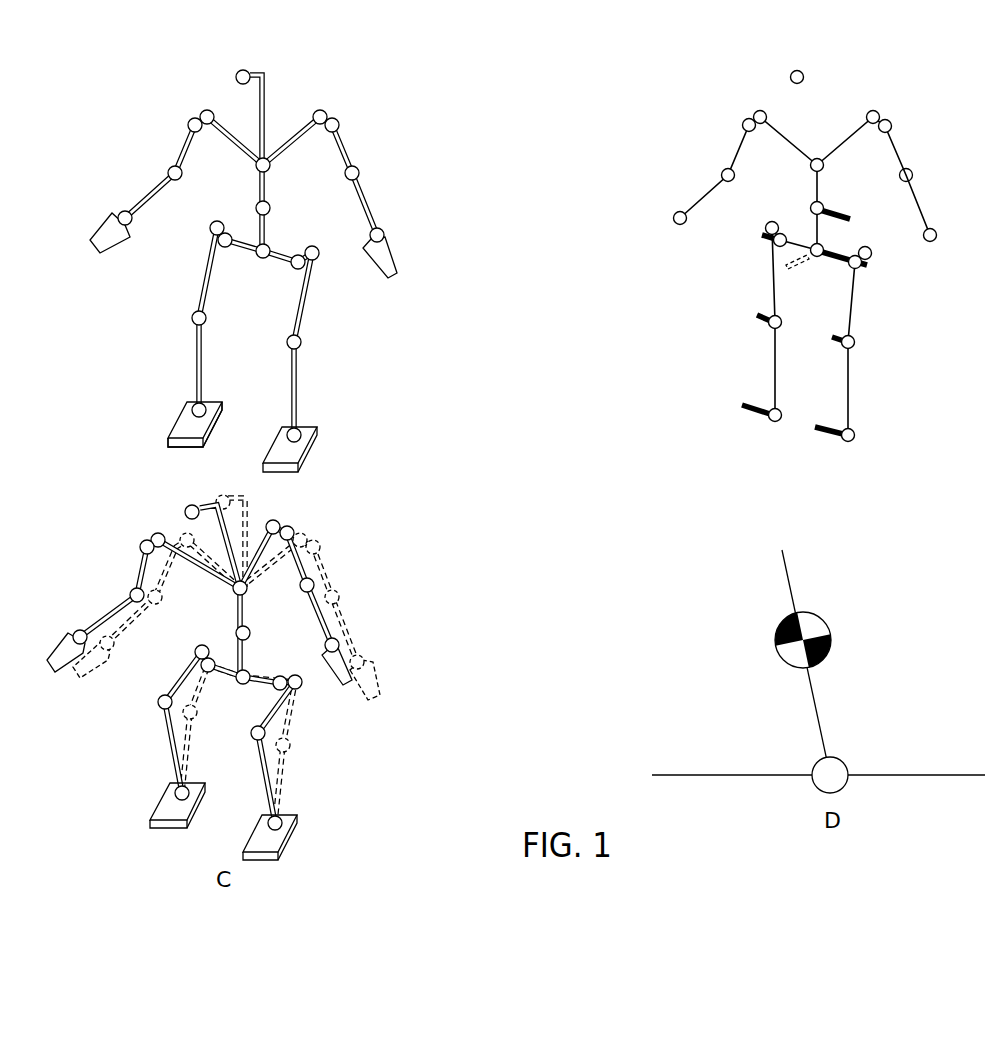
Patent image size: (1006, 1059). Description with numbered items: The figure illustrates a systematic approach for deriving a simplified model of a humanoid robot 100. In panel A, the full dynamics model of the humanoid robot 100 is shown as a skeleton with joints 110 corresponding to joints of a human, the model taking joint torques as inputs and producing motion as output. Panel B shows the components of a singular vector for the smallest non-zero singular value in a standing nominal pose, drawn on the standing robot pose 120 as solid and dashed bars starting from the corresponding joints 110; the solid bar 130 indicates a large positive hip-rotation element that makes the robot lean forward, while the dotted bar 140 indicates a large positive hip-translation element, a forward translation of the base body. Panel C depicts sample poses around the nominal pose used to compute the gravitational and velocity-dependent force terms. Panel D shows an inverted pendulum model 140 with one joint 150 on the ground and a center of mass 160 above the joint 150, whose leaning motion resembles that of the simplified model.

The humanoid robot 100 is at (314, 80).
The joint 110 is at (337, 124).
The simplified skeletal model 120 is at (897, 98).
The bar 130 is at (851, 258).
The dotted bar / inverted pendulum model 140 is at (806, 272).
The joint 150 is at (843, 756).
The center of mass 160 is at (828, 636).